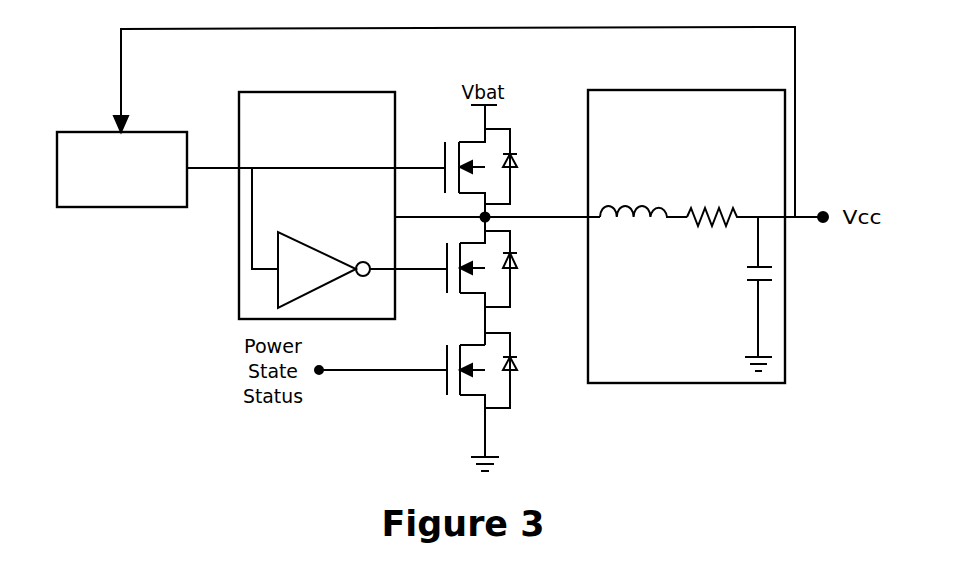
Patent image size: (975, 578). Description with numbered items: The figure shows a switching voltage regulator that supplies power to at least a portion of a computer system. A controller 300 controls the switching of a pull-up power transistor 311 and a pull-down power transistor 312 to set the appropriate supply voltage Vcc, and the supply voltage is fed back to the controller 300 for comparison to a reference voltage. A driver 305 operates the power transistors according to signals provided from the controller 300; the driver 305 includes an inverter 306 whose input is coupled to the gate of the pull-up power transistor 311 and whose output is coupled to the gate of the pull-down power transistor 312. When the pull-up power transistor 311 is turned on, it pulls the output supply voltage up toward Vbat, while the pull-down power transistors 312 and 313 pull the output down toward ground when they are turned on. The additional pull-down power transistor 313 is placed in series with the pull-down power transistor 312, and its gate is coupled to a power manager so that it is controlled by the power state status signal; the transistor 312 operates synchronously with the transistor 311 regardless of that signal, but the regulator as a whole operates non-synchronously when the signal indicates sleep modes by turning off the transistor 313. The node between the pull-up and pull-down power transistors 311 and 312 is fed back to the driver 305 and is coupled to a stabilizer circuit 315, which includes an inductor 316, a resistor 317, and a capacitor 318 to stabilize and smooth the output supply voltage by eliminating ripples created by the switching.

The controller 300 is at (104, 189).
The driver 305 is at (367, 124).
The inverter 306 is at (330, 279).
The pull-up power transistor 311 is at (455, 125).
The pull-down power transistor 312 is at (530, 242).
The pull-down power transistor 313 is at (462, 413).
The stabilizer circuit 315 is at (750, 123).
The inductor 316 is at (643, 224).
The resistor 317 is at (755, 202).
The capacitor 318 is at (739, 294).